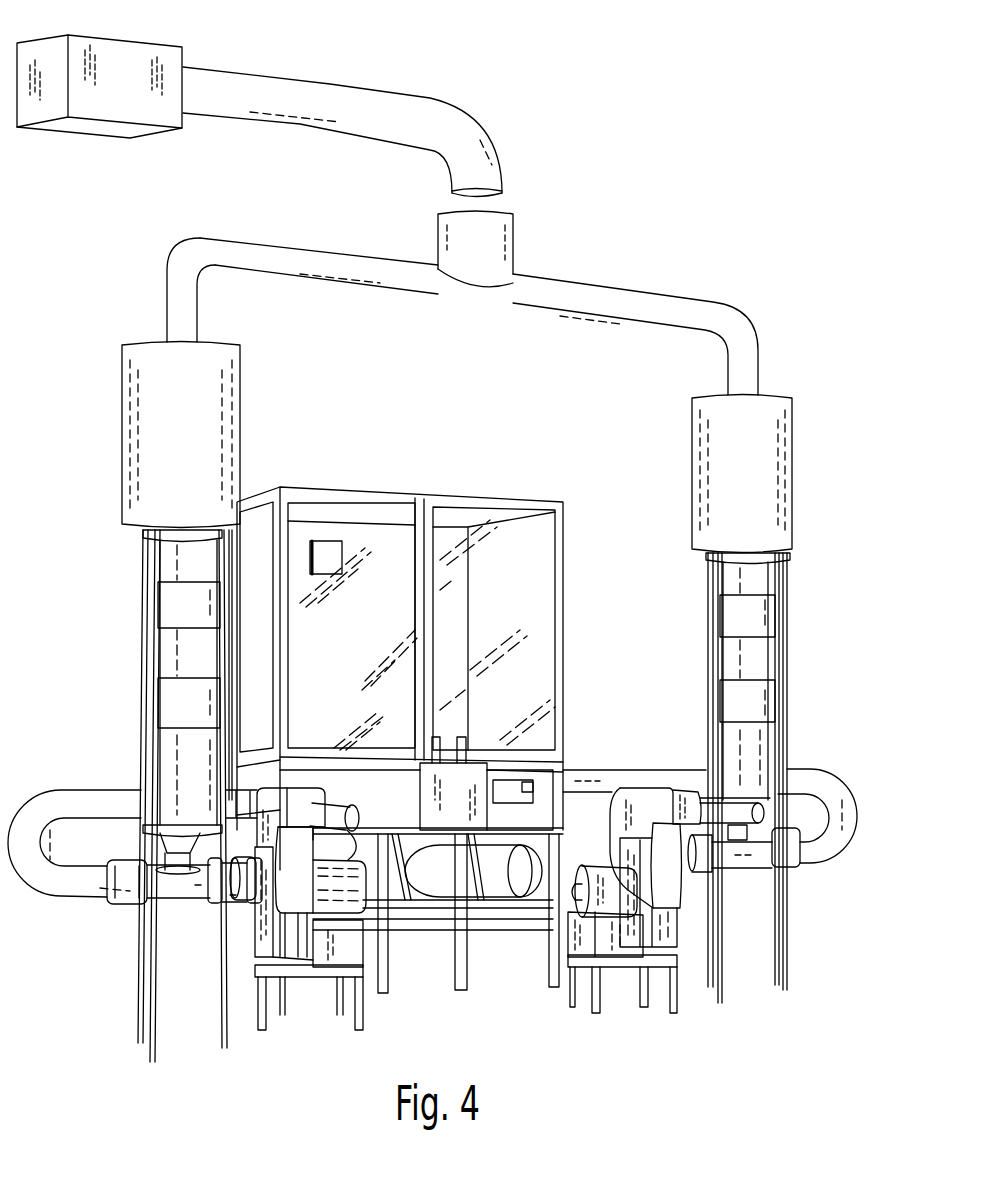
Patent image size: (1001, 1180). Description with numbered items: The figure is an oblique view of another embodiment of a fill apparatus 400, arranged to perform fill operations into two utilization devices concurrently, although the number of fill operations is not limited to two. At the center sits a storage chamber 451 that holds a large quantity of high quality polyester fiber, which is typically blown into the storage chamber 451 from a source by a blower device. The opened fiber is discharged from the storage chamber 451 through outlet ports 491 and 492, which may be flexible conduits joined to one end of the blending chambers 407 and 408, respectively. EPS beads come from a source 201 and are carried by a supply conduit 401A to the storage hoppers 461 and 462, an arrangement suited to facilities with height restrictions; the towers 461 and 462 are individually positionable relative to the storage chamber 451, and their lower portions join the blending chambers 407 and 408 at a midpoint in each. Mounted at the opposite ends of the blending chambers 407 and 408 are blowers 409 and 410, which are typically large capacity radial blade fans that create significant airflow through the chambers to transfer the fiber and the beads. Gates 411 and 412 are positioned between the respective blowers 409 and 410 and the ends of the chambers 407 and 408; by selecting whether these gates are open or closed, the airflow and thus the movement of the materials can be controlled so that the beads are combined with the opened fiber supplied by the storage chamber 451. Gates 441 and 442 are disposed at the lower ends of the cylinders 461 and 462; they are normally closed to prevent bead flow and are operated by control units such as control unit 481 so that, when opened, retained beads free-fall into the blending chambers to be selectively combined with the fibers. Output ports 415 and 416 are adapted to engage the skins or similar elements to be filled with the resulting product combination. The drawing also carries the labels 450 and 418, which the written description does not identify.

The source 201 is at (153, 82).
The fill apparatus 400 is at (470, 425).
The supply conduit 401A is at (492, 280).
The storage hopper 461 is at (127, 425).
The storage hopper 462 is at (792, 485).
The storage chamber 451 is at (532, 592).
The conduit 450 is at (658, 775).
The output port 416 is at (773, 813).
The pipe fitting 418 is at (767, 815).
The control unit 481 is at (118, 820).
The outlet port 491 is at (88, 890).
The outlet port 492 is at (817, 848).
The gate 441 is at (170, 862).
The gate 442 is at (735, 860).
The blending chamber 407 is at (187, 893).
The blending chamber 408 is at (748, 873).
The blower 409 is at (302, 877).
The gate 412 is at (663, 870).
The gate 411 is at (238, 887).
The blower 410 is at (629, 914).
The output port 415 is at (427, 833).